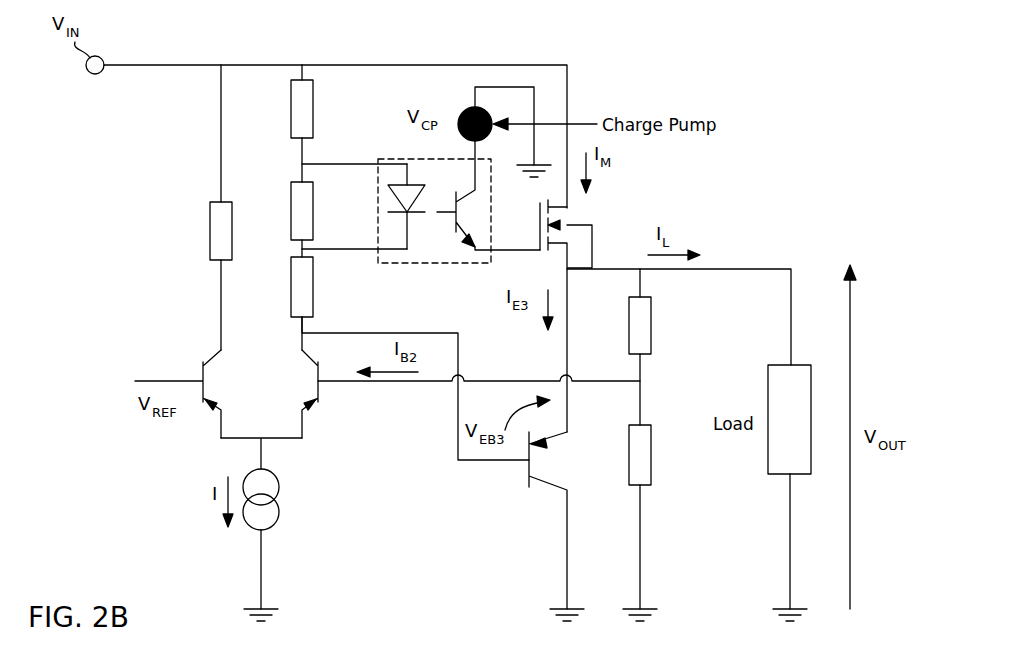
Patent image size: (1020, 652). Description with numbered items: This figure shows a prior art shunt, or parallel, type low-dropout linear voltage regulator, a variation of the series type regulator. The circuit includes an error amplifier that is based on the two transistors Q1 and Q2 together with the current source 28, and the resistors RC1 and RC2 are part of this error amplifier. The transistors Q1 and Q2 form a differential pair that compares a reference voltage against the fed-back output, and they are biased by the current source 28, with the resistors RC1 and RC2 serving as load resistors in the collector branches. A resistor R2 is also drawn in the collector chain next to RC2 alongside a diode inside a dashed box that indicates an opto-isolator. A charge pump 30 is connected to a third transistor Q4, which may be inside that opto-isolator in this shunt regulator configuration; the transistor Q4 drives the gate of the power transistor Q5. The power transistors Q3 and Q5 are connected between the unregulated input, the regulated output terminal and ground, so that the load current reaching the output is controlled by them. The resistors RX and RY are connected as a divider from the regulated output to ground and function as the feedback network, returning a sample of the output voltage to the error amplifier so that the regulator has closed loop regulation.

The charge pump 30 is at (467, 108).
The current source 28 is at (279, 487).
The transistor Q1 is at (212, 363).
The transistor Q2 is at (302, 363).
The power transistor Q3 is at (543, 478).
The third transistor Q4 is at (447, 220).
The power transistor Q5 is at (565, 205).
The resistor RC1 is at (210, 252).
The resistor RC2 is at (282, 103).
The resistor R2 is at (313, 222).
The resistor RX is at (652, 308).
The resistor RY is at (652, 438).